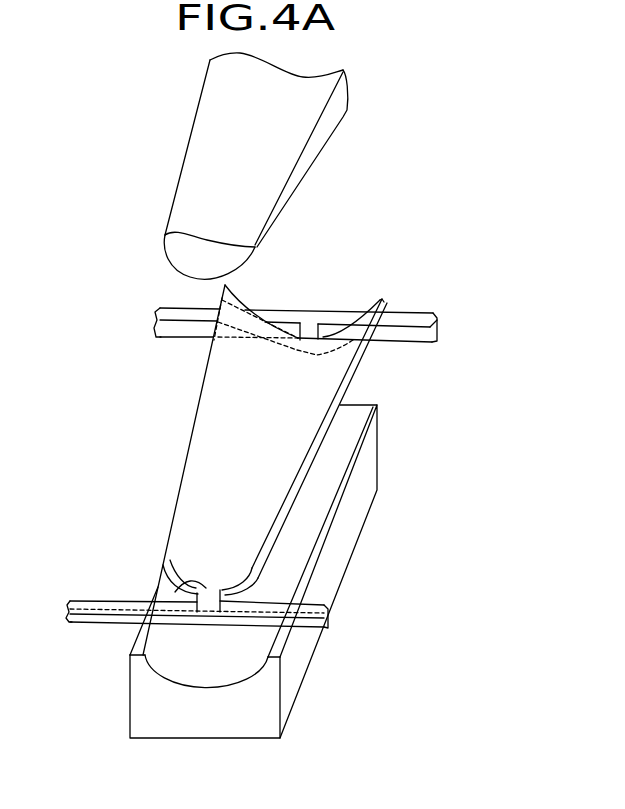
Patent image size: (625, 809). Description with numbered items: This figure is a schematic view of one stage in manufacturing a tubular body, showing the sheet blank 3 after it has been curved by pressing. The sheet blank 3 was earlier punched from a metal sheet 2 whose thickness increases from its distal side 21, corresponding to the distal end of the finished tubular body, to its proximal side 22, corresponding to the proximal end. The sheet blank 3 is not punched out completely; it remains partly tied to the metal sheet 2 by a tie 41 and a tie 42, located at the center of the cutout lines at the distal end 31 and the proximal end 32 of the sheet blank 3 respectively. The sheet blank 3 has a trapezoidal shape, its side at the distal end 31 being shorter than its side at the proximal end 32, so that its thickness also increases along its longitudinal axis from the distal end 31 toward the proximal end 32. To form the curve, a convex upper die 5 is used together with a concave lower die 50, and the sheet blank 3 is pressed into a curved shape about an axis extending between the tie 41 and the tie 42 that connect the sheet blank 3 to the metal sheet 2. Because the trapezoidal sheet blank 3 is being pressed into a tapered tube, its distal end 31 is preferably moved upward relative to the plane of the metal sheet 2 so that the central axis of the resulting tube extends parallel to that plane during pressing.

The upper die 5 is at (293, 175).
The metal sheet 2 is at (418, 318).
The proximal side 22 is at (437, 325).
The tie 42 is at (310, 328).
The sheet blank 3 is at (340, 362).
The proximal end 32 is at (381, 298).
The distal end 31 is at (253, 580).
The tie 41 is at (138, 643).
The distal side 21 is at (327, 617).
The lower die 50 is at (298, 660).